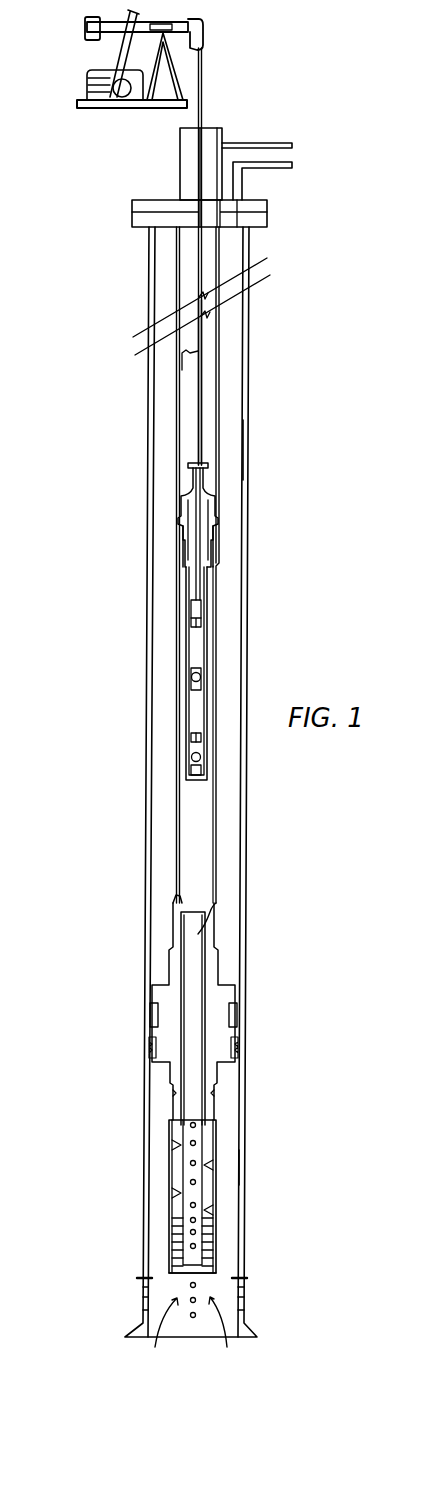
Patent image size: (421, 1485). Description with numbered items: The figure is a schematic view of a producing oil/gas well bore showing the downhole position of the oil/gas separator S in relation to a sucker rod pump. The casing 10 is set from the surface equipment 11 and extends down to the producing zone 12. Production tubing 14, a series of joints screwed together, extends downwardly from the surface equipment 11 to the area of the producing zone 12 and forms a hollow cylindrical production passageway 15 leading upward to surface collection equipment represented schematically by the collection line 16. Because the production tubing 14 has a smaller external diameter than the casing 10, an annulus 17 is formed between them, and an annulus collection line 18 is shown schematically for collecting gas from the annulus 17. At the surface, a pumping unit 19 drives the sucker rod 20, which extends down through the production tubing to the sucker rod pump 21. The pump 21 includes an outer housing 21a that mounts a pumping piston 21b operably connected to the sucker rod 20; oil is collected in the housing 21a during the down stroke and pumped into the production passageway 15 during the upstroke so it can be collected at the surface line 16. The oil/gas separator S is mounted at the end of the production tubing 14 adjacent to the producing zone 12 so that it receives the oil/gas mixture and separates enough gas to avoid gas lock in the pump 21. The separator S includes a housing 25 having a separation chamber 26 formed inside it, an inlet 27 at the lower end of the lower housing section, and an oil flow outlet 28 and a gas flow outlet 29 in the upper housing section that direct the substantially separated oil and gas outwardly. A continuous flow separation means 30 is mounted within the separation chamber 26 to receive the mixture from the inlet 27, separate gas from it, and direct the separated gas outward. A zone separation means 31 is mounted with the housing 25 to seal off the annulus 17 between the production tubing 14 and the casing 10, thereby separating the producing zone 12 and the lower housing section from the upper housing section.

The casing 10 is at (247, 640).
The surface equipment 11 is at (260, 211).
The producing zone 12 is at (245, 1307).
The production tubing 14 is at (217, 405).
The production passageway 15 is at (203, 892).
The collection line 16 is at (253, 142).
The annulus 17 is at (228, 453).
The annulus collection line 18 is at (293, 162).
The pumping unit 19 is at (170, 16).
The sucker rod 20 is at (202, 363).
The sucker rod pump 21 is at (211, 512).
The outer housing 21a is at (212, 543).
The pumping piston 21b is at (200, 603).
The housing 25 is at (214, 1127).
The separation chamber 26 is at (207, 1182).
The inlet 27 is at (205, 1279).
The oil flow outlet 28 is at (179, 905).
The gas flow outlet 29 is at (206, 928).
The continuous flow separation means 30 is at (176, 1172).
The zone separation means 31 is at (226, 997).
The oil/gas separator S is at (230, 1167).